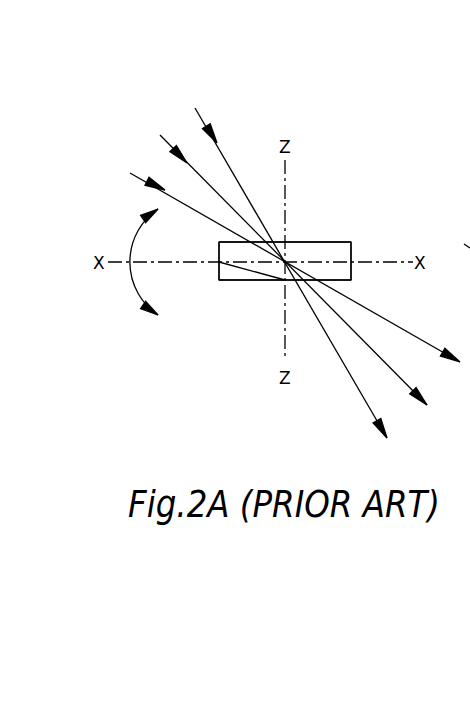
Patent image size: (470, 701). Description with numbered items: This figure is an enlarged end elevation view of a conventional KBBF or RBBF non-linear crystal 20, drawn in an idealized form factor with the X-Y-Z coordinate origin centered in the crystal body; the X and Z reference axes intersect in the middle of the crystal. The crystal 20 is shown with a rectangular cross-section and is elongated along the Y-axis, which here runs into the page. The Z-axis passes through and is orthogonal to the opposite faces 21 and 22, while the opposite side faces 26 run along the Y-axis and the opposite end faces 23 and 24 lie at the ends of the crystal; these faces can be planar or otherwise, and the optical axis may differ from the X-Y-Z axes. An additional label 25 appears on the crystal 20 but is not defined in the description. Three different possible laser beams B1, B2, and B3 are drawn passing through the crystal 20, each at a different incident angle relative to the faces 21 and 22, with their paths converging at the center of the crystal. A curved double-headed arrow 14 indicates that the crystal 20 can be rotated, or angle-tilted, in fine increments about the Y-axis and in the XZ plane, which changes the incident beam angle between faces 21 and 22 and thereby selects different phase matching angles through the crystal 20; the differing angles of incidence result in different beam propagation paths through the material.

The arrow 14 is at (133, 230).
The non-linear crystal 20 is at (324, 224).
The face 21 is at (334, 242).
The face 22 is at (263, 284).
The end face 23 is at (459, 234).
The end face 24 is at (236, 272).
The left side 25 is at (219, 244).
The side face 26 is at (352, 273).
The laser beam B1 is at (148, 181).
The laser beam B2 is at (163, 140).
The laser beam B3 is at (203, 111).